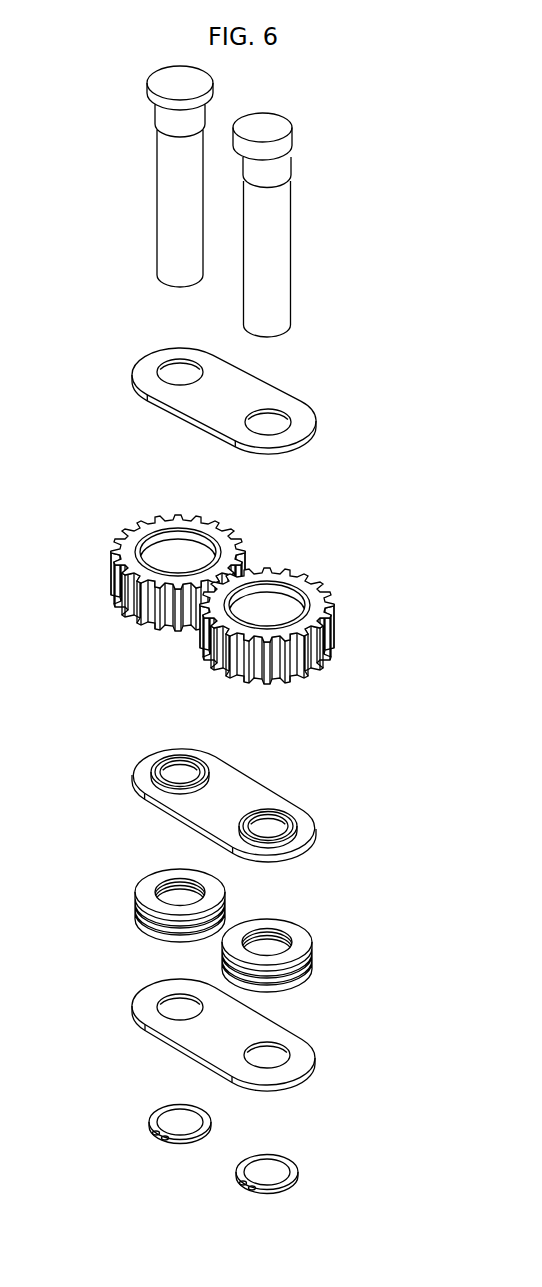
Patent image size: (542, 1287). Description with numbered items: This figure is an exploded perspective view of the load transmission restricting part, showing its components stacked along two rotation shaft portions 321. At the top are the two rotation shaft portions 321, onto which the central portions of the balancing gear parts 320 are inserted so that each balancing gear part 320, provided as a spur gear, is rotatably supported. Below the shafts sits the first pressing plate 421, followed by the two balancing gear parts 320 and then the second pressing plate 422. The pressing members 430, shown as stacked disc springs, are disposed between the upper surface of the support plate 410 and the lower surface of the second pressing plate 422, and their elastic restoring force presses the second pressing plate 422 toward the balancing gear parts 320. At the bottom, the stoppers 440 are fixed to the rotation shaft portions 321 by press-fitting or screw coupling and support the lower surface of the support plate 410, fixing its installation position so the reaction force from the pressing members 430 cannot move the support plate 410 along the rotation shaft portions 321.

The rotation shaft portion 321 is at (278, 250).
The first pressing plate 421 is at (243, 387).
The balancing gear part 320 is at (162, 607).
The second pressing plate 422 is at (243, 800).
The pressing member 430 is at (148, 908).
The support plate 410 is at (197, 1032).
The stopper 440 is at (153, 1120).